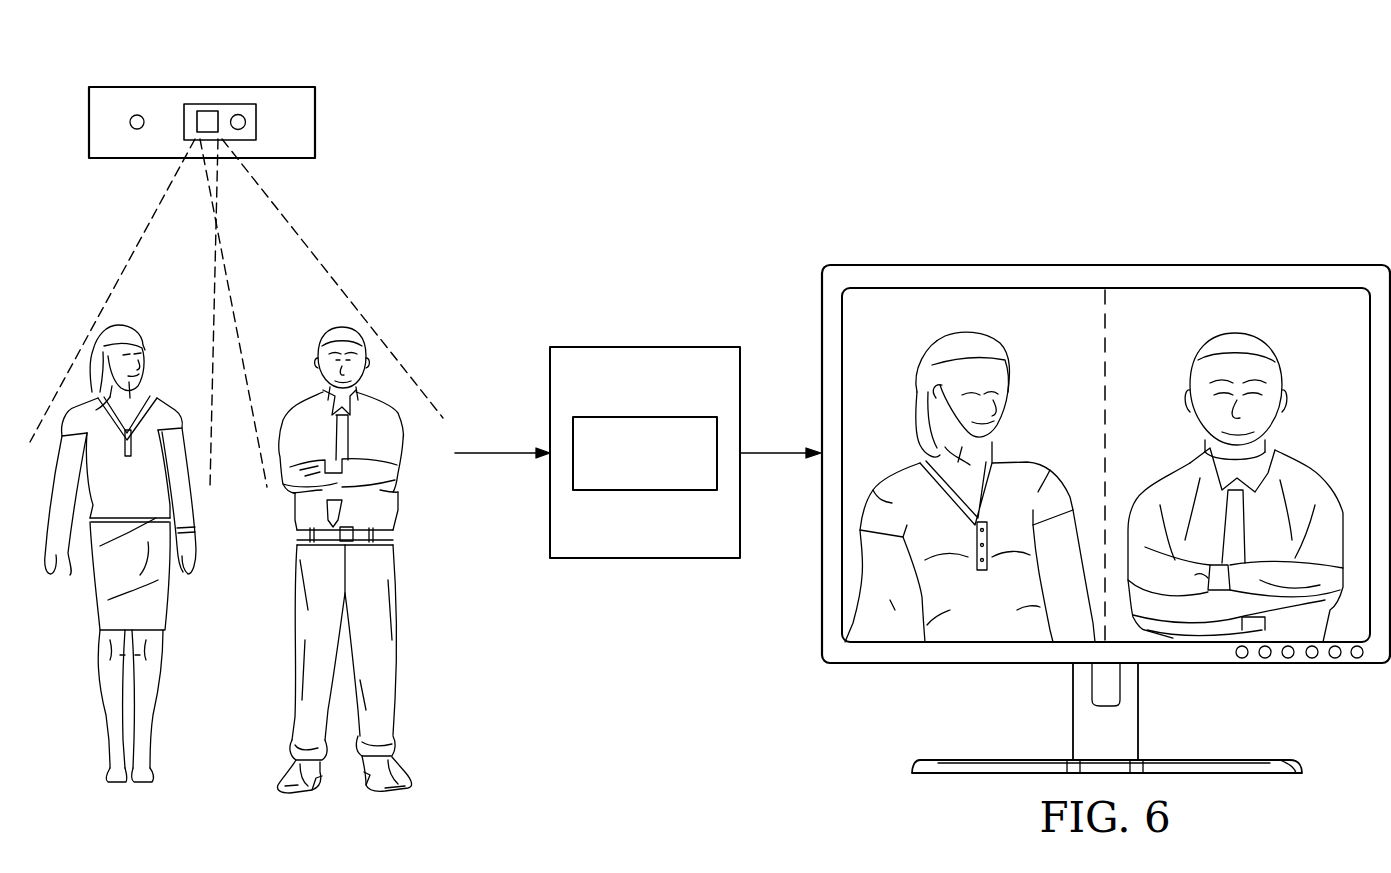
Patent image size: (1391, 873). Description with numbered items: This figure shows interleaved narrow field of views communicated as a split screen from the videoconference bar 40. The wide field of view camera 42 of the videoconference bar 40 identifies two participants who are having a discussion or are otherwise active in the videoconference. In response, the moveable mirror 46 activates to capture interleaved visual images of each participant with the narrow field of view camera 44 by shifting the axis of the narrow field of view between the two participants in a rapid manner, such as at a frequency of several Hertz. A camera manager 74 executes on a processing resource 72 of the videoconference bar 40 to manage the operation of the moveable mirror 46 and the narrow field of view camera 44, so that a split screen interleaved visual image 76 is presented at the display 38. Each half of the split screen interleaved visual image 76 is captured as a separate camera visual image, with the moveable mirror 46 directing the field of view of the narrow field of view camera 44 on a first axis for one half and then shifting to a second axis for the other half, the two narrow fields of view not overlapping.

The display 38 is at (1010, 265).
The videoconference bar 40 is at (89, 122).
The wide field of view camera 42 is at (137, 115).
The narrow field of view camera 44 is at (232, 104).
The moveable mirror 46 is at (210, 111).
The processing resource 72 is at (645, 347).
The camera manager 74 is at (645, 490).
The split screen interleaved visual image 76 is at (1200, 300).